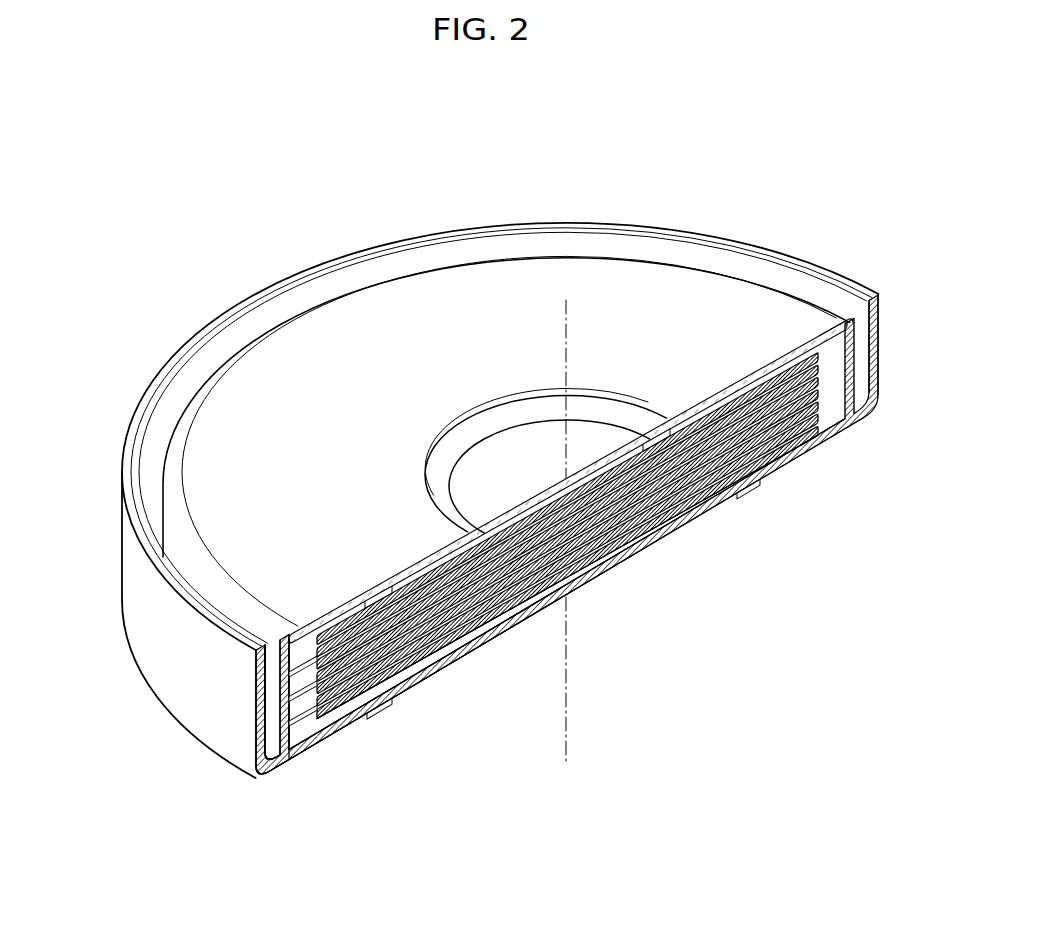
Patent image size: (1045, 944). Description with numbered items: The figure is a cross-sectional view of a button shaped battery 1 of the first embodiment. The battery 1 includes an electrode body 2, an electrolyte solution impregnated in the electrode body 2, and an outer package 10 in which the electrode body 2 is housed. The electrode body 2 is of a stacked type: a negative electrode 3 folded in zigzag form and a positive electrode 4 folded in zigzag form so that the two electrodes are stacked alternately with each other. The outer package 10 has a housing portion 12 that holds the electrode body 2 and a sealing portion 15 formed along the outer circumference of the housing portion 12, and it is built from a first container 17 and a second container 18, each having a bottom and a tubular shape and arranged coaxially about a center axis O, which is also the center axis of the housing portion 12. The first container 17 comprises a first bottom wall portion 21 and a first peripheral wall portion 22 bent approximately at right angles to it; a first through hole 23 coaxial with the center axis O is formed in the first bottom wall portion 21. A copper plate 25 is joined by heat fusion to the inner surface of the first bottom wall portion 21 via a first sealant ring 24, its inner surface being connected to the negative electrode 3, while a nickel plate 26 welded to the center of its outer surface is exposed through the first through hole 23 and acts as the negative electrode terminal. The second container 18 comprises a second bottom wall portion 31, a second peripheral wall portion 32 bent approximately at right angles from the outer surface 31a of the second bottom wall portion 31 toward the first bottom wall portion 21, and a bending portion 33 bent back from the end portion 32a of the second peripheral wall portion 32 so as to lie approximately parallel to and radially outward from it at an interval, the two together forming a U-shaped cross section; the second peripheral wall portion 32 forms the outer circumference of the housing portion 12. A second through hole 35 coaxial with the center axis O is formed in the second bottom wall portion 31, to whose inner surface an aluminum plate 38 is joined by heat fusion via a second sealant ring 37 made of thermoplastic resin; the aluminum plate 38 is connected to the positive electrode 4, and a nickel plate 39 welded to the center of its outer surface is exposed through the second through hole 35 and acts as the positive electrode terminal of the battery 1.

The battery 1 is at (342, 197).
The electrode body 2 is at (830, 340).
The negative electrode 3 is at (782, 453).
The positive electrode 4 is at (780, 367).
The outer package 10 is at (165, 300).
The housing portion 12 is at (186, 390).
The sealing portion 15 is at (115, 532).
The first container 17 is at (908, 580).
The second container 18 is at (118, 748).
The first bottom wall portion 21 is at (827, 437).
The first peripheral wall portion 22 is at (877, 360).
The first through hole 23 is at (478, 660).
The first sealant ring 24 is at (372, 700).
The copper plate 25 is at (427, 668).
The nickel plate 26 is at (578, 590).
The second bottom wall portion 31 is at (253, 707).
The outer surface of the second bottom wall portion 31a is at (297, 587).
The second peripheral wall portion 32 is at (273, 737).
The end portion 32a is at (273, 757).
The bending portion 33 is at (272, 752).
The second through hole 35 is at (605, 410).
The second sealant ring 37 is at (453, 453).
The aluminum plate 38 is at (392, 583).
The nickel plate 39 is at (510, 450).
The center axis O is at (575, 731).